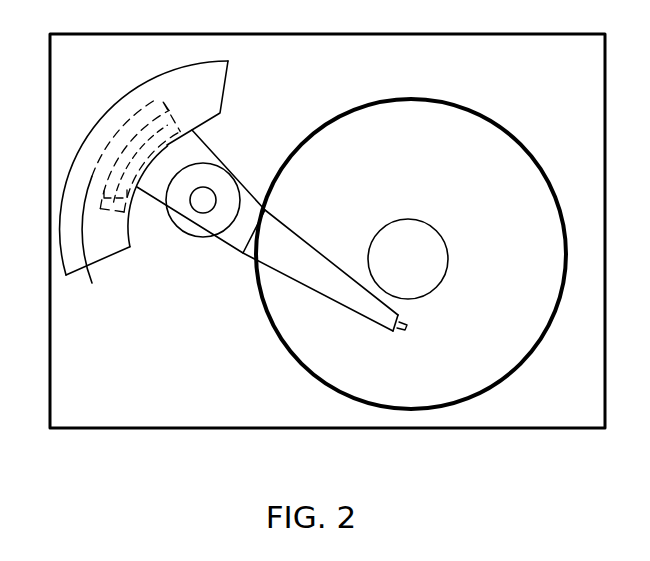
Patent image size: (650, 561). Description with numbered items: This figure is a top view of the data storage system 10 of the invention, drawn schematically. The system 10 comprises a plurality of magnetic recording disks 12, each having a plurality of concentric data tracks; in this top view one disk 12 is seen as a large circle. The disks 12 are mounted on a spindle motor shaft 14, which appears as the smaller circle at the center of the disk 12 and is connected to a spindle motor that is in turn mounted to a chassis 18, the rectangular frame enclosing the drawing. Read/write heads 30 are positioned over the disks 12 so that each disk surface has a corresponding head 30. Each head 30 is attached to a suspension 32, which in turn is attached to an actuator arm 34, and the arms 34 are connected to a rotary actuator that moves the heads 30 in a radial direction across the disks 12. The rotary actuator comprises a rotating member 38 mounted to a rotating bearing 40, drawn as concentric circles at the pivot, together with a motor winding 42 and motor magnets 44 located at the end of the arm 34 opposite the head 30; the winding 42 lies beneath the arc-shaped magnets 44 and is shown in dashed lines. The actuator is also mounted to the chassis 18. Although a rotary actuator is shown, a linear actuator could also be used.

The data storage system 10 is at (79, 452).
The magnetic recording disks 12 is at (350, 166).
The spindle motor shaft 14 is at (424, 260).
The chassis 18 is at (528, 91).
The read/write heads 30 is at (396, 334).
The suspensions 32 is at (306, 268).
The actuator arms 34 is at (249, 216).
The rotating member 38 is at (200, 229).
The rotating bearing 40 is at (197, 204).
The motor winding 42 is at (92, 283).
The motor magnets 44 is at (190, 100).